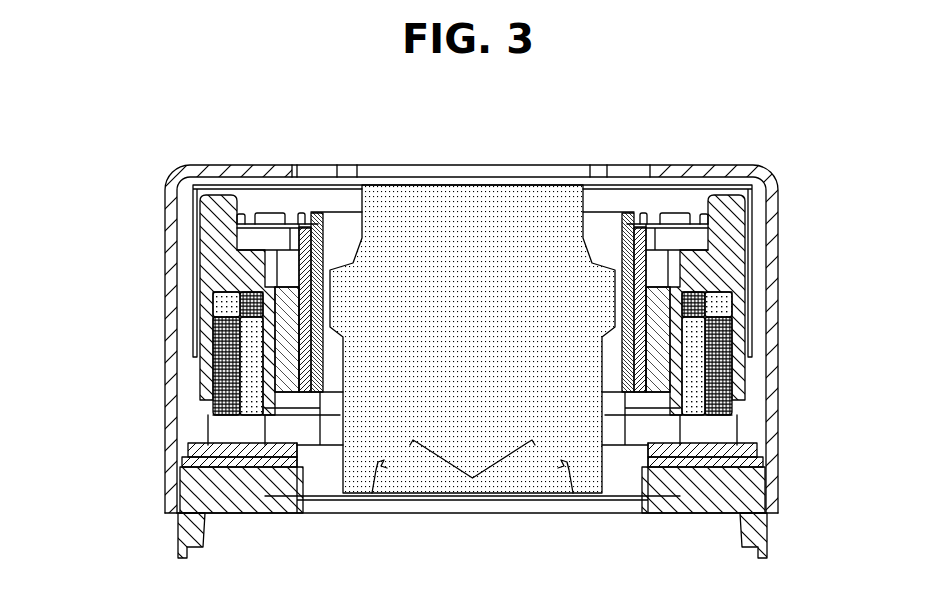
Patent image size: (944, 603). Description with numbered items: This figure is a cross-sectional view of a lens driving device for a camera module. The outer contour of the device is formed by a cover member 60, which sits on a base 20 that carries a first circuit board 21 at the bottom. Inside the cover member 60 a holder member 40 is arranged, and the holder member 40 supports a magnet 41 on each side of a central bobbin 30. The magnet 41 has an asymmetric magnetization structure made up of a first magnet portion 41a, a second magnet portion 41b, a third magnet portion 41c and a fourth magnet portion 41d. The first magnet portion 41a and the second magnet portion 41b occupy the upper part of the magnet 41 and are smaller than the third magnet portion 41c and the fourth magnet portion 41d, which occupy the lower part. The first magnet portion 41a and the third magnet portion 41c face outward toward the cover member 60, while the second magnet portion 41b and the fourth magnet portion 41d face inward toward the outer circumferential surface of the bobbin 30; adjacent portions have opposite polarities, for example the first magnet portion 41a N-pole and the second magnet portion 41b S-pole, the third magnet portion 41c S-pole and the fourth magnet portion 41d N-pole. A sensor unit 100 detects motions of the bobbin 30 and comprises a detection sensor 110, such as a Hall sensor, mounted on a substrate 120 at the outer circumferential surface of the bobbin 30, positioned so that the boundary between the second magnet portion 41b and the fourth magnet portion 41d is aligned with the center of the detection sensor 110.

The base 20 is at (700, 498).
The first circuit board 21 is at (742, 465).
The bobbin 30 is at (322, 212).
The holder member 40 is at (210, 266).
The magnet 41 is at (382, 356).
The first magnet portion 41a is at (213, 298).
The second magnet portion 41b is at (215, 313).
The third magnet portion 41c is at (217, 367).
The fourth magnet portion 41d is at (396, 375).
The cover member 60 is at (183, 178).
The sensor unit 100 is at (297, 248).
The detection sensor 110 is at (288, 322).
The substrate 120 is at (311, 338).